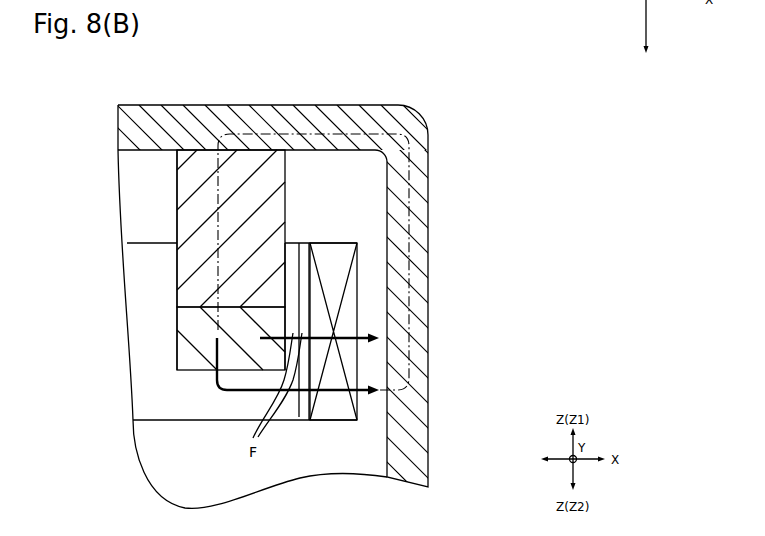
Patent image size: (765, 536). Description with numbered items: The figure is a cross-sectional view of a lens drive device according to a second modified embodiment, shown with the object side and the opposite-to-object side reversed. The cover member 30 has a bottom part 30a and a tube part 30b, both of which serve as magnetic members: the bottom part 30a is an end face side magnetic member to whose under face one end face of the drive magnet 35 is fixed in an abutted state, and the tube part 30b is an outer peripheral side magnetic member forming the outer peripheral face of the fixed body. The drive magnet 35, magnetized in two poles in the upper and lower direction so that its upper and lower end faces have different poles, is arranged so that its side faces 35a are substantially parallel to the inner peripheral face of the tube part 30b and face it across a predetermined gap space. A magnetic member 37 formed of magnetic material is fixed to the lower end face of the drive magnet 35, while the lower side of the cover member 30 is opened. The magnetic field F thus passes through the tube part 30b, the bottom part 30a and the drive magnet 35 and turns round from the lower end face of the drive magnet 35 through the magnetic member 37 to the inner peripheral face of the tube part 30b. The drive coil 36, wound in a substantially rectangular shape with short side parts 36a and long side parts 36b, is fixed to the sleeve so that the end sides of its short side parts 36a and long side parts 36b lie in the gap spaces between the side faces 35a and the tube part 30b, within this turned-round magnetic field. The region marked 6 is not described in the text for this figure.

The cover member 30 is at (385, 286).
The bottom part 30a is at (272, 105).
The tube part 30b is at (428, 183).
The movable body 6 is at (378, 222).
The drive magnet 35 is at (263, 228).
The side faces 35a is at (287, 200).
The drive coil 36 is at (317, 331).
The short side parts 36a is at (357, 305).
The long side parts 36b is at (150, 243).
The magnetic member 37 is at (177, 333).